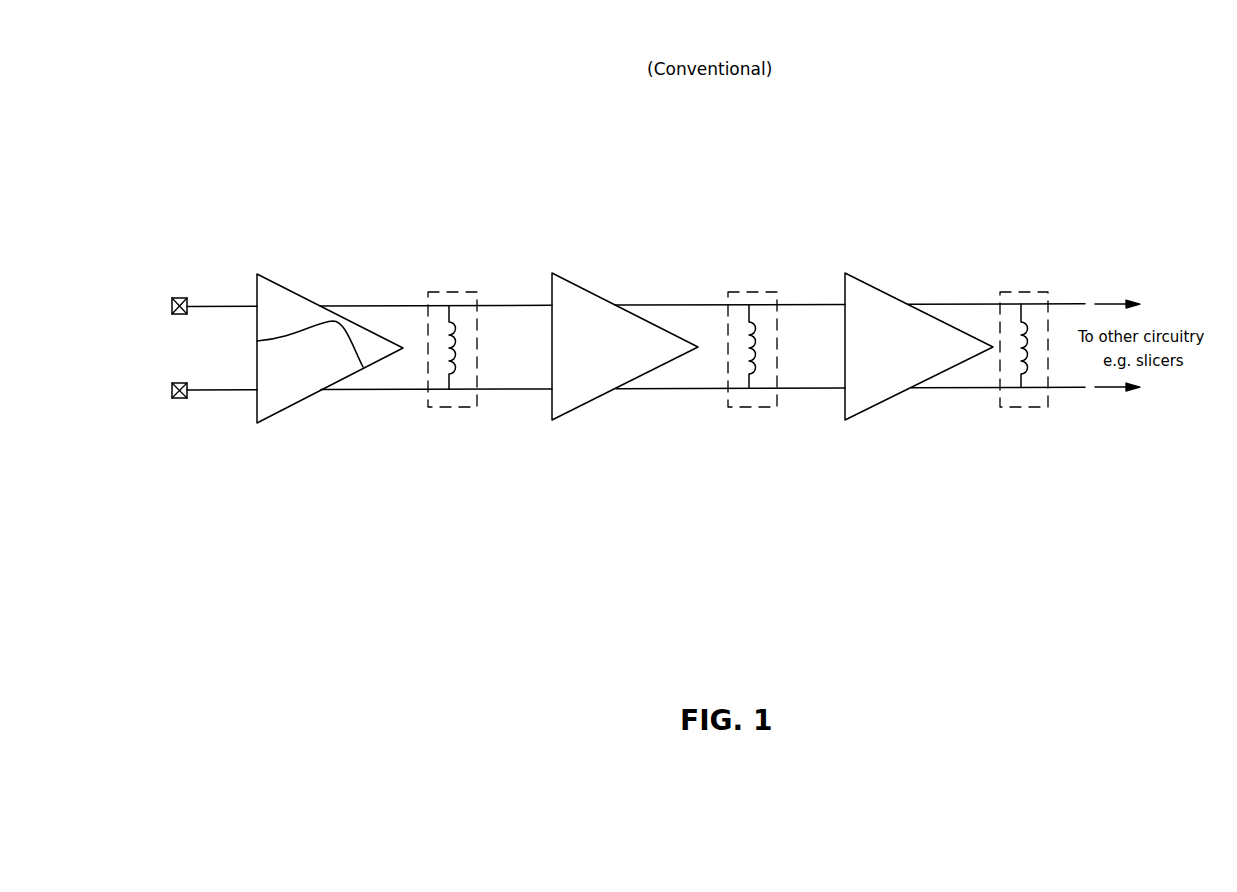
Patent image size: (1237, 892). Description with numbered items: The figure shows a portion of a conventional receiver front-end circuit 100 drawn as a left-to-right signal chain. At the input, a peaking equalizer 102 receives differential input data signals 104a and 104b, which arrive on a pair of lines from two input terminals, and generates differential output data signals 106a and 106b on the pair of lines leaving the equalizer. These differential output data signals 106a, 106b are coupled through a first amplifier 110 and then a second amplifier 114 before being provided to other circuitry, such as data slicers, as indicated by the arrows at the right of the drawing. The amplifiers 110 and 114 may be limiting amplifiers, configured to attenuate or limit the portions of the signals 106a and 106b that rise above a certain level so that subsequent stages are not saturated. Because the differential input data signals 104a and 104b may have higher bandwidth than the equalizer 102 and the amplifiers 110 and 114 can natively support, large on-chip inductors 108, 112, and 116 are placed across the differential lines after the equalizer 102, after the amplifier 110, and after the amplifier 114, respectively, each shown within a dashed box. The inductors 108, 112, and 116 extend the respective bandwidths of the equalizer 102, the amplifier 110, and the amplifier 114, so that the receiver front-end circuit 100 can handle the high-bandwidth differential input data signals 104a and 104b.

The receiver front-end circuit 100 is at (1228, 77).
The peaking equalizer 102 is at (297, 292).
The differential input data signal 104a is at (208, 304).
The differential input data signal 104b is at (208, 388).
The differential output data signal 106a is at (372, 304).
The differential output data signal 106b is at (393, 392).
The inductor 108 is at (472, 407).
The amplifier 110 is at (597, 293).
The inductor 112 is at (740, 407).
The amplifier 114 is at (897, 297).
The inductor 116 is at (1030, 291).